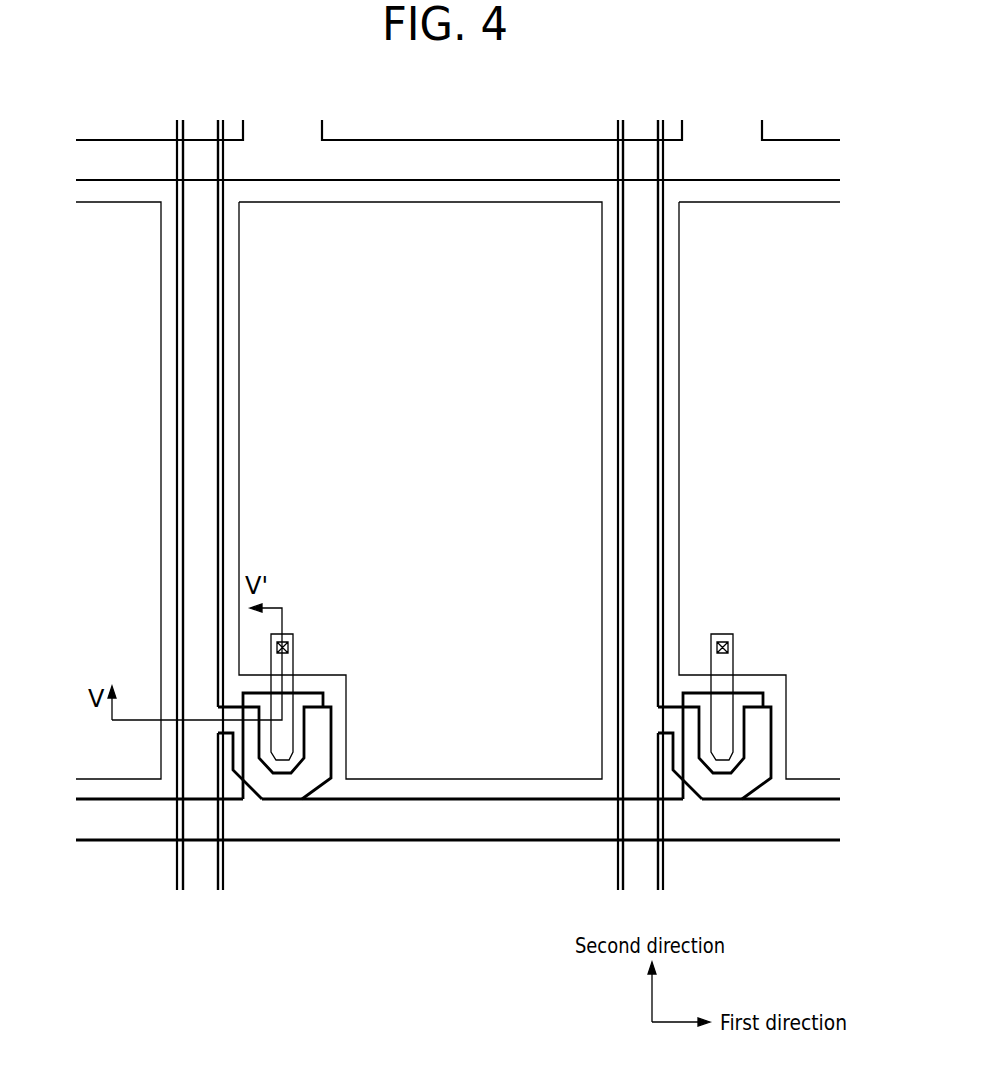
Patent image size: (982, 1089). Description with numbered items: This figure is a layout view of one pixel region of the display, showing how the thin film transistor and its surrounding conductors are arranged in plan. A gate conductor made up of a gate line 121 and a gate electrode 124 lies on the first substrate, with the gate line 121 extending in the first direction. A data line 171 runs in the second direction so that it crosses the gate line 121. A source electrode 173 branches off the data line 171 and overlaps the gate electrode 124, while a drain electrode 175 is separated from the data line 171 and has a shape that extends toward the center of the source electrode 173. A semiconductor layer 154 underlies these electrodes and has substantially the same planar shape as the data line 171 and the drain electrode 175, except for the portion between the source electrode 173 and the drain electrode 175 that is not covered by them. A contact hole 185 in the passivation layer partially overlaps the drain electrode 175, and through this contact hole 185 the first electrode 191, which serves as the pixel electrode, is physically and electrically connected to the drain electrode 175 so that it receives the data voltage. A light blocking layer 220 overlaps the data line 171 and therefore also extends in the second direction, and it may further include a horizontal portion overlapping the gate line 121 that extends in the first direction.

The light blocking layer 220 is at (178, 375).
The first electrode 191 is at (238, 487).
The data line 171 is at (218, 613).
The contact hole 185 is at (290, 646).
The drain electrode 175 is at (294, 656).
The semiconductor layer 154 is at (298, 715).
The source electrode 173 is at (287, 799).
The gate electrode 124 is at (323, 792).
The gate line 121 is at (493, 800).